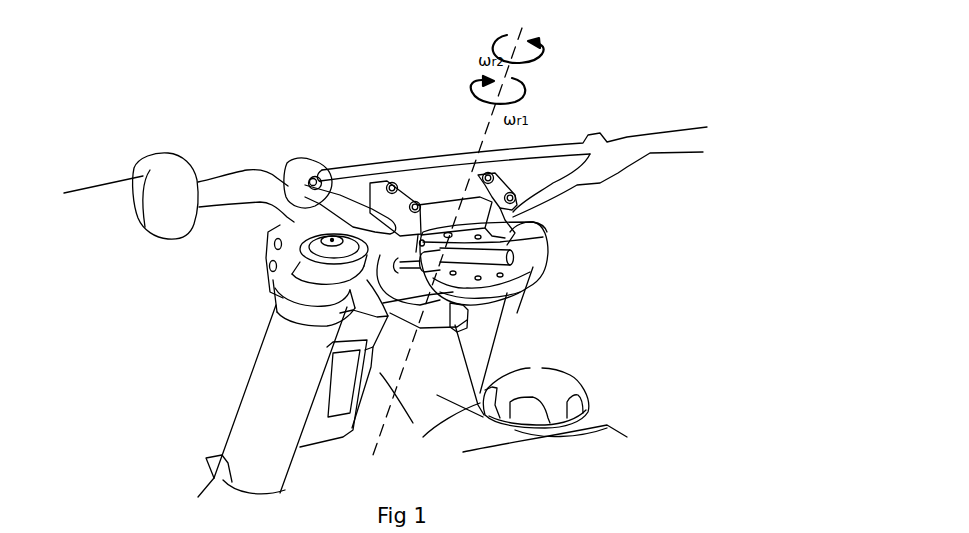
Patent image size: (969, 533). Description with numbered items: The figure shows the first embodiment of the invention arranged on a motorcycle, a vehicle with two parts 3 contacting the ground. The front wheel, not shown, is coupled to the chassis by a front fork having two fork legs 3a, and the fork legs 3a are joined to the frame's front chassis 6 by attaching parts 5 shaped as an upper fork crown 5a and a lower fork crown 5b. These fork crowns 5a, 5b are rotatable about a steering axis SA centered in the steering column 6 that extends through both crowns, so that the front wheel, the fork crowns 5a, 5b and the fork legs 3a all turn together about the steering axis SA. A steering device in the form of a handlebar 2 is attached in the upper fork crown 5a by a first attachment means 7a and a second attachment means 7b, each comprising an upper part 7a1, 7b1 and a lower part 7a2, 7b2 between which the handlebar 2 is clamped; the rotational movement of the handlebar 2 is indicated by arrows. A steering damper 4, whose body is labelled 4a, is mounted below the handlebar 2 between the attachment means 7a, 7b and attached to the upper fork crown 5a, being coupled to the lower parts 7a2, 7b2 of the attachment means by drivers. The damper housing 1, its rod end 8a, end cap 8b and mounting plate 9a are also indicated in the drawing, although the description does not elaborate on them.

The steering damper housing 1 is at (547, 268).
The handlebar 2 is at (560, 192).
The parts contacting the ground 3 is at (392, 387).
The fork legs 3a is at (290, 362).
The steering damper 4 is at (558, 293).
The damper body 4a is at (513, 270).
The attaching parts 5 is at (237, 283).
The upper fork crown 5a is at (377, 253).
The lower fork crown 5b is at (207, 477).
The front chassis / steering column 6 is at (520, 423).
The first attachment means 7a is at (342, 145).
The upper part of first attachment means 7a1 is at (362, 205).
The lower part of first attachment means 7a2 is at (330, 203).
The second attachment means 7b is at (437, 124).
The upper part of second attachment means 7b1 is at (472, 172).
The lower part of second attachment means 7b2 is at (466, 185).
The damper rod 8a is at (430, 248).
The damper end cap 8b is at (547, 237).
The mounting plate 9a is at (370, 257).
The steering axis SA is at (445, 225).